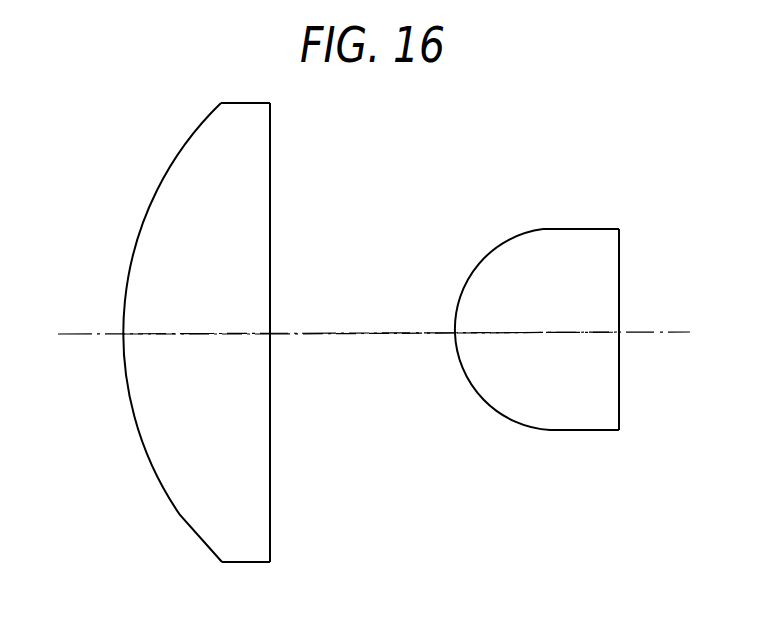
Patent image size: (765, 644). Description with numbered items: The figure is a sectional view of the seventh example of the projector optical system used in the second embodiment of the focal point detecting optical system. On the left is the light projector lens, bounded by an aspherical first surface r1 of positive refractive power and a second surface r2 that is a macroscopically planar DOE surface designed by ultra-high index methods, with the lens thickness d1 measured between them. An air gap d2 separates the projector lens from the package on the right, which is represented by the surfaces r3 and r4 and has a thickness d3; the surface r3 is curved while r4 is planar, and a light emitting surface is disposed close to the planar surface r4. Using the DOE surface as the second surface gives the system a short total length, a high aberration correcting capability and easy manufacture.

The DOE surface DOE is at (247, 363).
The first surface r1 is at (185, 517).
The second surface r2 is at (272, 528).
The package surface r3 is at (508, 422).
The planar package surface r4 is at (620, 405).
The thickness of projector lens d1 is at (188, 336).
The air gap d2 is at (332, 336).
The thickness of package d3 is at (538, 334).